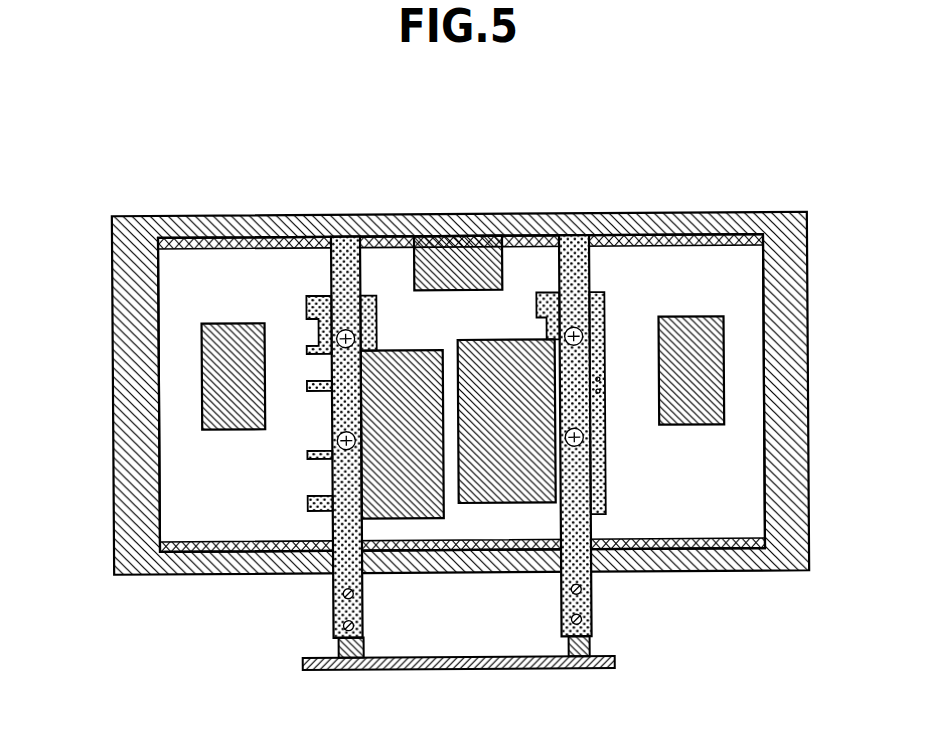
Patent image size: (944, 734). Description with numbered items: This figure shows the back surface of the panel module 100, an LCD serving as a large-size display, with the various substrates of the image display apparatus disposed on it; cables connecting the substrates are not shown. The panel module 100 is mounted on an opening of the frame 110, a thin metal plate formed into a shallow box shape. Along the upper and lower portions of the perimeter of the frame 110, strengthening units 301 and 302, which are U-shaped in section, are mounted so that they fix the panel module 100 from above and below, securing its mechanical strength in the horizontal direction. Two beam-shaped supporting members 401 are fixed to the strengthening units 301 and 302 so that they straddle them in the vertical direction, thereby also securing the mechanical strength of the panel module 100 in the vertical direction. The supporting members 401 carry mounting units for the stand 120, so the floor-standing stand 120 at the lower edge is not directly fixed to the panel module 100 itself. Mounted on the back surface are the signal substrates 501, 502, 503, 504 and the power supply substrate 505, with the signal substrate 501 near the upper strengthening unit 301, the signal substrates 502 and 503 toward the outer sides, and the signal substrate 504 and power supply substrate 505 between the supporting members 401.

The panel module 100 is at (242, 280).
The frame 110 is at (690, 222).
The stand 120 is at (614, 660).
The strengthening unit 301 is at (623, 242).
The strengthening unit 302 is at (188, 553).
The supporting member 401 is at (346, 253).
The signal substrate 501 is at (462, 256).
The signal substrate 502 is at (204, 381).
The signal substrate 503 is at (712, 370).
The signal substrate 504 is at (415, 493).
The power supply substrate 505 is at (506, 493).